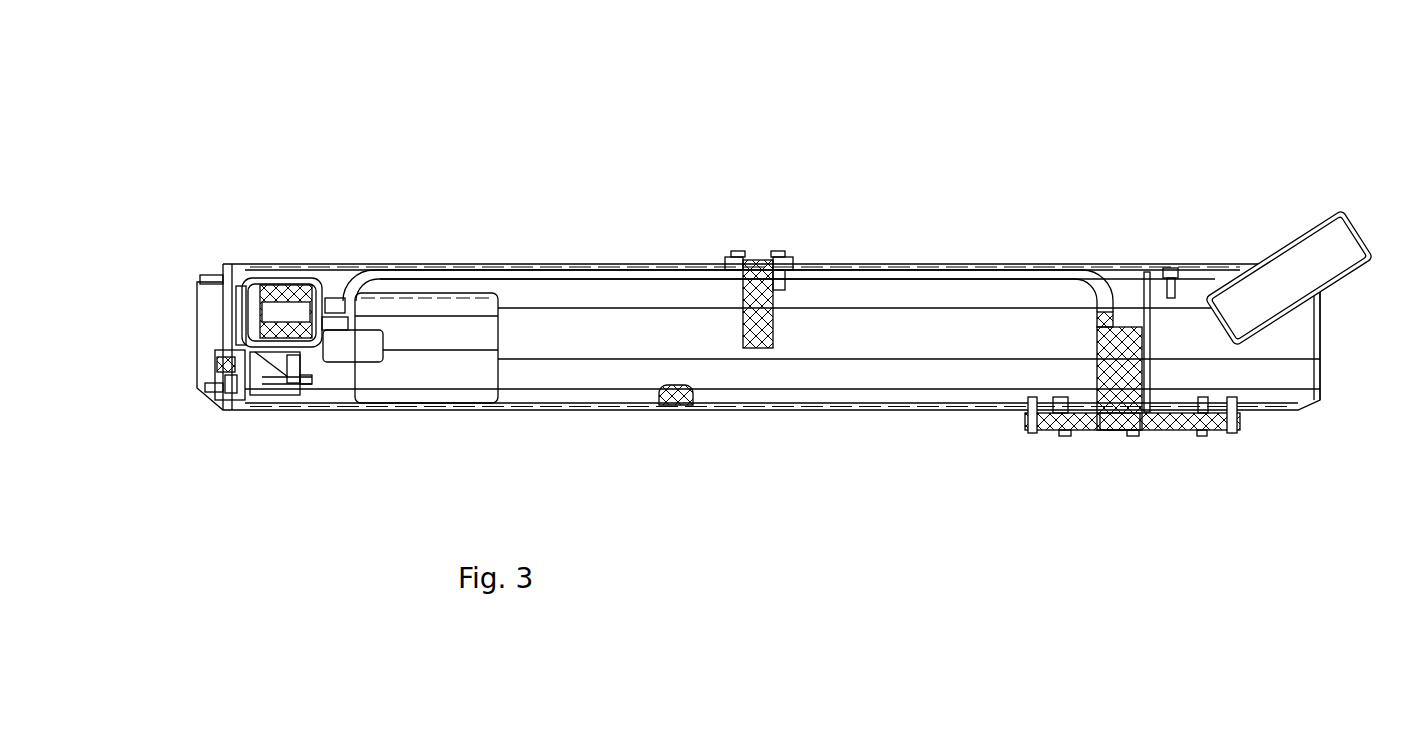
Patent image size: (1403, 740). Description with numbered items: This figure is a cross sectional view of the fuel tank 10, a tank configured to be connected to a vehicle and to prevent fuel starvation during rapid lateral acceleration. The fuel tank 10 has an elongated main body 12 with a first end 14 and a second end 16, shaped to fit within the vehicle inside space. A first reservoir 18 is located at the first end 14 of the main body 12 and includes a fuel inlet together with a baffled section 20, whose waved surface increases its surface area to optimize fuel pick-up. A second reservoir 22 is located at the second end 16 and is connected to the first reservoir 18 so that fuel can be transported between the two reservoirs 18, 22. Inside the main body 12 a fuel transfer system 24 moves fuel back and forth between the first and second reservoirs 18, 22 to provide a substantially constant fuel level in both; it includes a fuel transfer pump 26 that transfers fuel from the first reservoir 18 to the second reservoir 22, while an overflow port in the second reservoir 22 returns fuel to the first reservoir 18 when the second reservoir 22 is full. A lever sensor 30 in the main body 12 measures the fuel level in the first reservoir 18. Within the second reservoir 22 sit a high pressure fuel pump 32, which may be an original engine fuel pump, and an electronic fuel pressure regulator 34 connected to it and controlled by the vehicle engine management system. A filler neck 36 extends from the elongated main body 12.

The fuel tank 10 is at (780, 173).
The main body 12 is at (914, 231).
The first end 14 is at (1302, 347).
The second end 16 is at (215, 320).
The first reservoir 18 is at (1143, 437).
The baffled section 20 is at (1108, 408).
The second reservoir 22 is at (432, 340).
The fuel transfer system 24 is at (634, 141).
The fuel transfer pump 26 is at (1117, 355).
The lever sensor 30 is at (755, 300).
The high pressure fuel pump 32 is at (288, 387).
The electronic fuel pressure regulator 34 is at (233, 390).
The filler neck 36 is at (1337, 233).